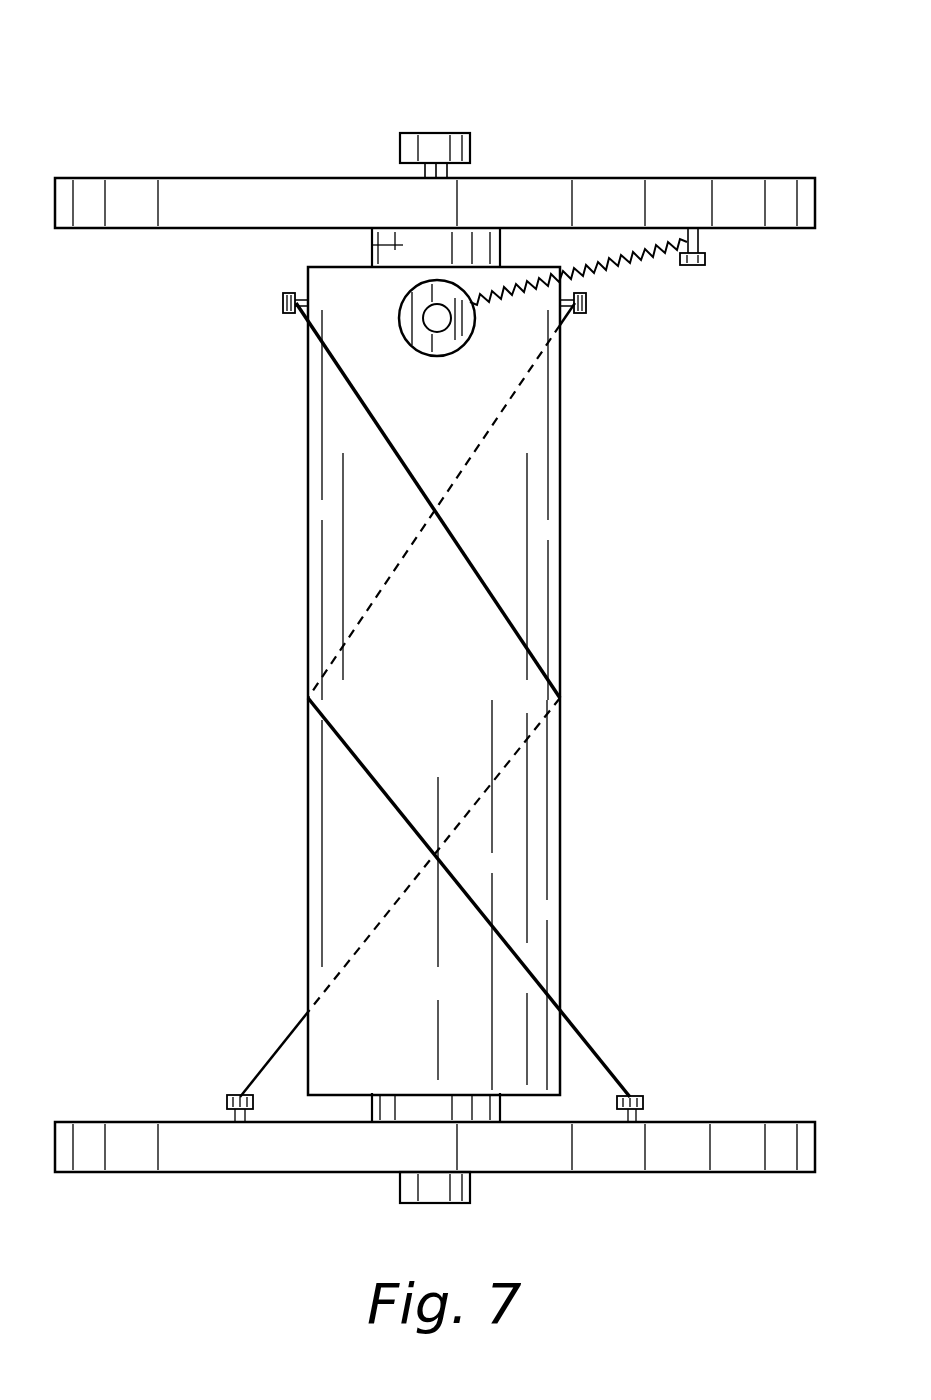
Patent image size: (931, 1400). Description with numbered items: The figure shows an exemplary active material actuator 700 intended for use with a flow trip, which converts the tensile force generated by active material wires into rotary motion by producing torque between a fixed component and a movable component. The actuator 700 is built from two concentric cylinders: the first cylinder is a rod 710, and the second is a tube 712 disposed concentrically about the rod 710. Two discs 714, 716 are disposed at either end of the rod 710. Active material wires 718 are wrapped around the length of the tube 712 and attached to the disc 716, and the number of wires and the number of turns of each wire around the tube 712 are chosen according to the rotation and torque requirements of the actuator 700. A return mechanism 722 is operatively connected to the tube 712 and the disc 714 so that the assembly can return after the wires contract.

The active material actuator 700 is at (728, 104).
The rod 710 is at (372, 248).
The tube 712 is at (330, 790).
The disc 714 is at (180, 178).
The disc 716 is at (737, 1122).
The active material wires 718 is at (362, 395).
The return mechanism 722 is at (637, 257).